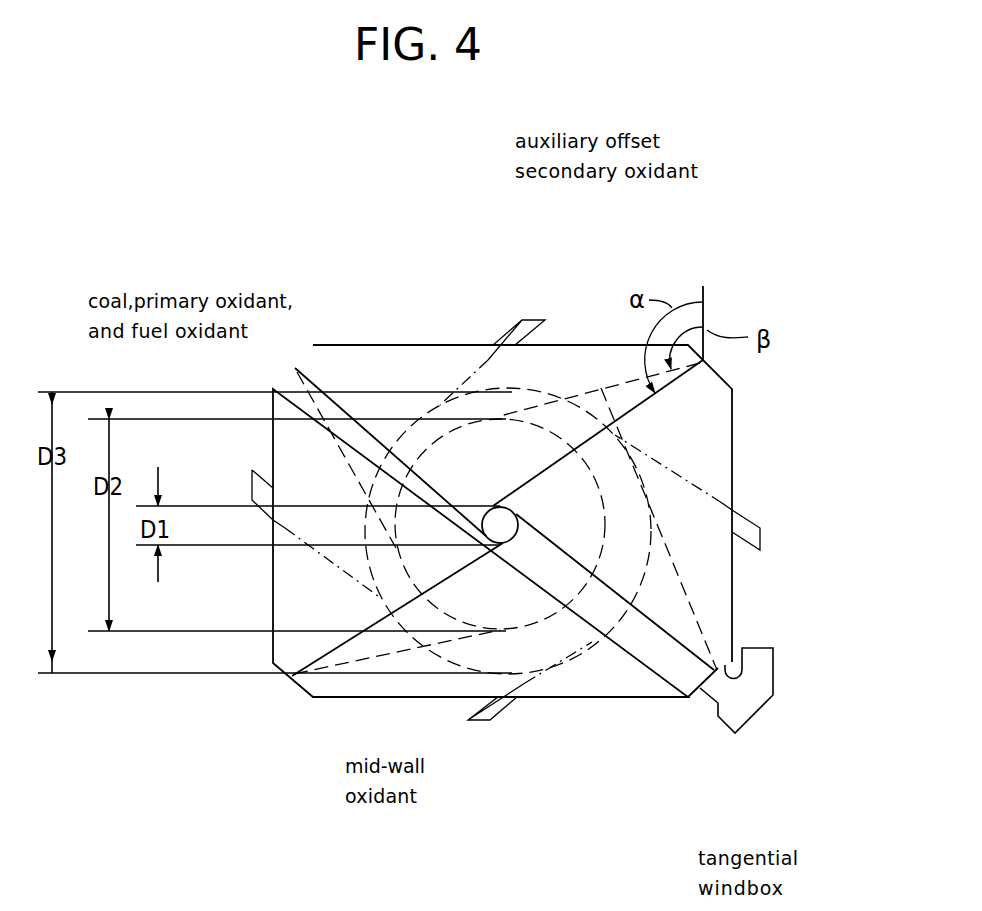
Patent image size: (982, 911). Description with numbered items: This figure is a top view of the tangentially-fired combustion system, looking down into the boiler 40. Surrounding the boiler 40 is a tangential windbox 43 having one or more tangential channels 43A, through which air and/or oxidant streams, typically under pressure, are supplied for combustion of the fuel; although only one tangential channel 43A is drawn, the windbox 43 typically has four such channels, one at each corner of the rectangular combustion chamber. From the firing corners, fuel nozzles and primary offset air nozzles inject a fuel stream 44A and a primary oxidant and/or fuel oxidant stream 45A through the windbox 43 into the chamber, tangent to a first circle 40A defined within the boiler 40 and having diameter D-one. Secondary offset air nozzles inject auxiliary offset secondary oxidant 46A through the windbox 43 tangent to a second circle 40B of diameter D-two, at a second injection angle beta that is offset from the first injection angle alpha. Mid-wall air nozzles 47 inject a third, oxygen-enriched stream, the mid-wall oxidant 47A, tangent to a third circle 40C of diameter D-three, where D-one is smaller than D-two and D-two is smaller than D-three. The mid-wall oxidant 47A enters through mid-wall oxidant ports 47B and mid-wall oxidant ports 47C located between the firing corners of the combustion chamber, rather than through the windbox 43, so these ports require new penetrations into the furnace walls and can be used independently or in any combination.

The boiler 40 is at (485, 250).
The first circle 40A is at (520, 546).
The second circle 40B is at (443, 432).
The third circle 40C is at (401, 436).
The tangential windbox 43 is at (771, 732).
The tangential channel 43A is at (773, 678).
The fuel stream 44A is at (478, 506).
The primary oxidant and/or fuel oxidant stream 45A is at (652, 398).
The auxiliary offset secondary oxidant 46A is at (601, 388).
The mid-wall air nozzle 47 is at (475, 522).
The mid-wall oxidant 47A is at (460, 382).
The mid-wall oxidant port 47B is at (505, 335).
The mid-wall oxidant port 47C is at (262, 471).